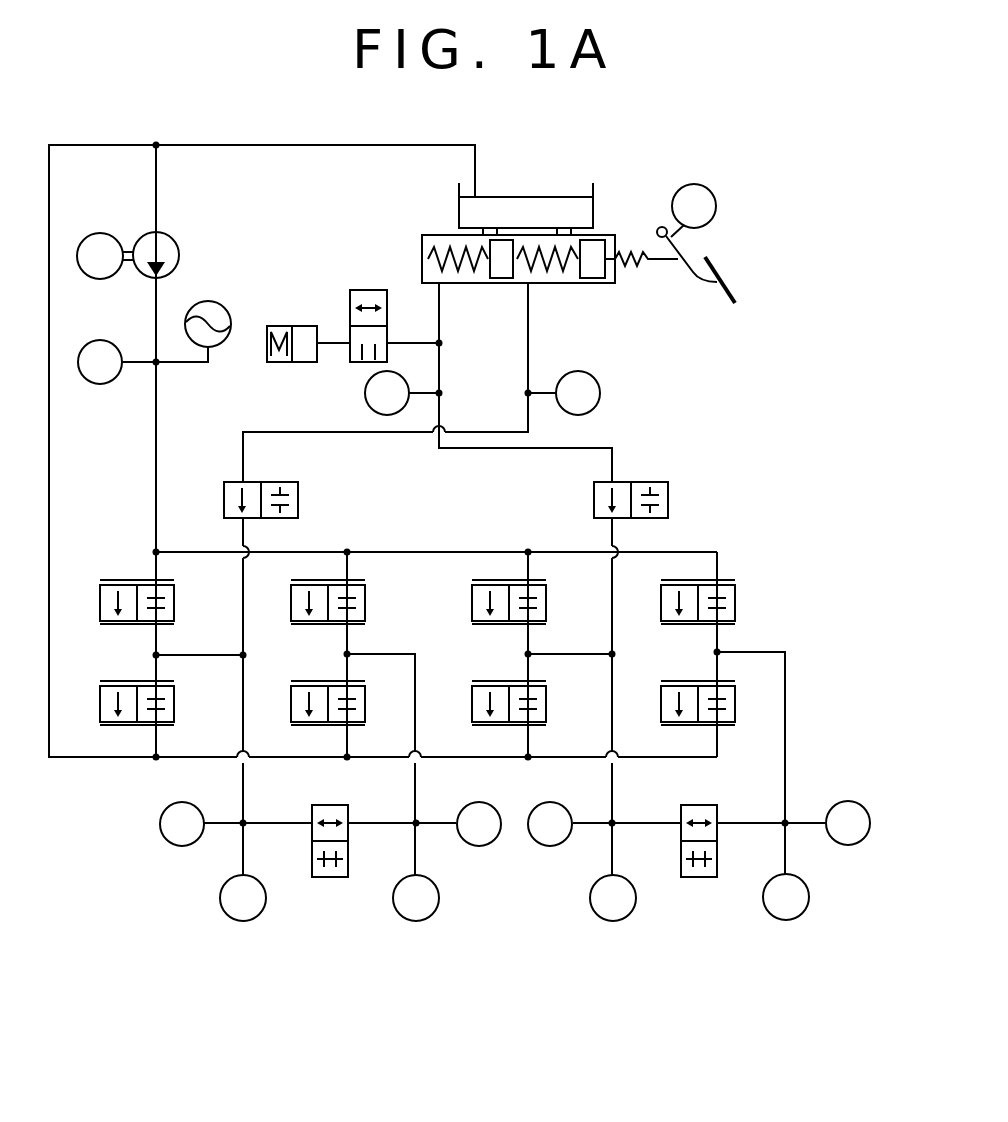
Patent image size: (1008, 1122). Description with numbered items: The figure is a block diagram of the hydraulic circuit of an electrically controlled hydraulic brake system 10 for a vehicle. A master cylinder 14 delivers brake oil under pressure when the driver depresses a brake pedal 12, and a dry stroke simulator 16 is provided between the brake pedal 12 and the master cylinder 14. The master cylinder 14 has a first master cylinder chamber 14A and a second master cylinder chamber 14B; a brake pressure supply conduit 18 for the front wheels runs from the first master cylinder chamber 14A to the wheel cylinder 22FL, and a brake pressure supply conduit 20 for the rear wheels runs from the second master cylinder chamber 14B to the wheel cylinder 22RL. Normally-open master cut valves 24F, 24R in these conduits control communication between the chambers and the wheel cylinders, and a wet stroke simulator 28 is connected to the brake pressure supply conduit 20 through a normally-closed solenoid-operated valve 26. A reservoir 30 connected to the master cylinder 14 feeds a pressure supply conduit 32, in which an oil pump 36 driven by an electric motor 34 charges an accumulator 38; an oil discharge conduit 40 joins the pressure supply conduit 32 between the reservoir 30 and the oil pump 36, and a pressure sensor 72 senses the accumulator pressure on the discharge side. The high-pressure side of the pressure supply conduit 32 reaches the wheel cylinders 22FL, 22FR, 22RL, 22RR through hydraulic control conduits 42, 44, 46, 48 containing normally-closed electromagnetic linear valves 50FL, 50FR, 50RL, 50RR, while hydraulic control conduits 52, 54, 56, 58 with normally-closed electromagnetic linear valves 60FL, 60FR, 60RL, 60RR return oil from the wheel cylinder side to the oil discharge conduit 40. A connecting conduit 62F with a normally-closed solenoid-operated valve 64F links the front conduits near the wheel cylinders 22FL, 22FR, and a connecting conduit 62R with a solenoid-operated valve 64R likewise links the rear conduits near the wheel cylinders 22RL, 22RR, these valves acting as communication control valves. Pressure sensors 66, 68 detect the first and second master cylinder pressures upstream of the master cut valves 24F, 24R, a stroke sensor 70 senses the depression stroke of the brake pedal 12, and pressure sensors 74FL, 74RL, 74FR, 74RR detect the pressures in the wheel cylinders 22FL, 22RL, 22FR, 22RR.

The electrically controlled hydraulic brake system 10 is at (587, 170).
The brake pedal 12 is at (718, 270).
The master cylinder 14 is at (440, 236).
The first master cylinder chamber 14A is at (553, 272).
The second master cylinder chamber 14B is at (460, 273).
The dry stroke simulator 16 is at (645, 265).
The brake pressure supply conduit 18 is at (528, 358).
The brake pressure supply conduit 20 is at (441, 376).
The wheel cylinder 22FL is at (240, 922).
The wheel cylinder 22FR is at (413, 922).
The wheel cylinder 22RL is at (608, 922).
The wheel cylinder 22RR is at (780, 922).
The solenoid-operated valve 24F is at (298, 490).
The solenoid-operated valve 24R is at (668, 490).
The solenoid-operated valve 26 is at (376, 290).
The wet stroke simulator 28 is at (282, 362).
The reservoir 30 is at (520, 198).
The pressure supply conduit 32 is at (290, 145).
The electric motor 34 is at (103, 233).
The oil pump 36 is at (172, 235).
The accumulator 38 is at (215, 302).
The oil discharge conduit 40 is at (49, 493).
The hydraulic control conduit 42 is at (200, 655).
The hydraulic control conduit 44 is at (390, 652).
The hydraulic control conduit 46 is at (573, 652).
The hydraulic control conduit 48 is at (785, 710).
The electromagnetic linear valve 50FL is at (100, 600).
The electromagnetic linear valve 50FR is at (291, 610).
The electromagnetic linear valve 50RL is at (472, 605).
The electromagnetic linear valve 50RR is at (738, 600).
The hydraulic control conduit 52 is at (160, 740).
The hydraulic control conduit 54 is at (352, 740).
The hydraulic control conduit 56 is at (530, 740).
The hydraulic control conduit 58 is at (718, 730).
The electromagnetic linear valve 60FL is at (100, 702).
The electromagnetic linear valve 60FR is at (291, 703).
The electromagnetic linear valve 60RL is at (472, 702).
The electromagnetic linear valve 60RR is at (663, 702).
The connecting conduit 62F is at (272, 820).
The connecting conduit 62R is at (642, 820).
The solenoid-operated valve 64F is at (327, 880).
The solenoid-operated valve 64R is at (693, 880).
The pressure sensor 66 is at (600, 398).
The pressure sensor 68 is at (365, 398).
The stroke sensor 70 is at (710, 188).
The pressure sensor 72 is at (92, 385).
The pressure sensor 74FL is at (173, 848).
The pressure sensor 74FR is at (465, 805).
The pressure sensor 74RL is at (540, 848).
The pressure sensor 74RR is at (847, 800).